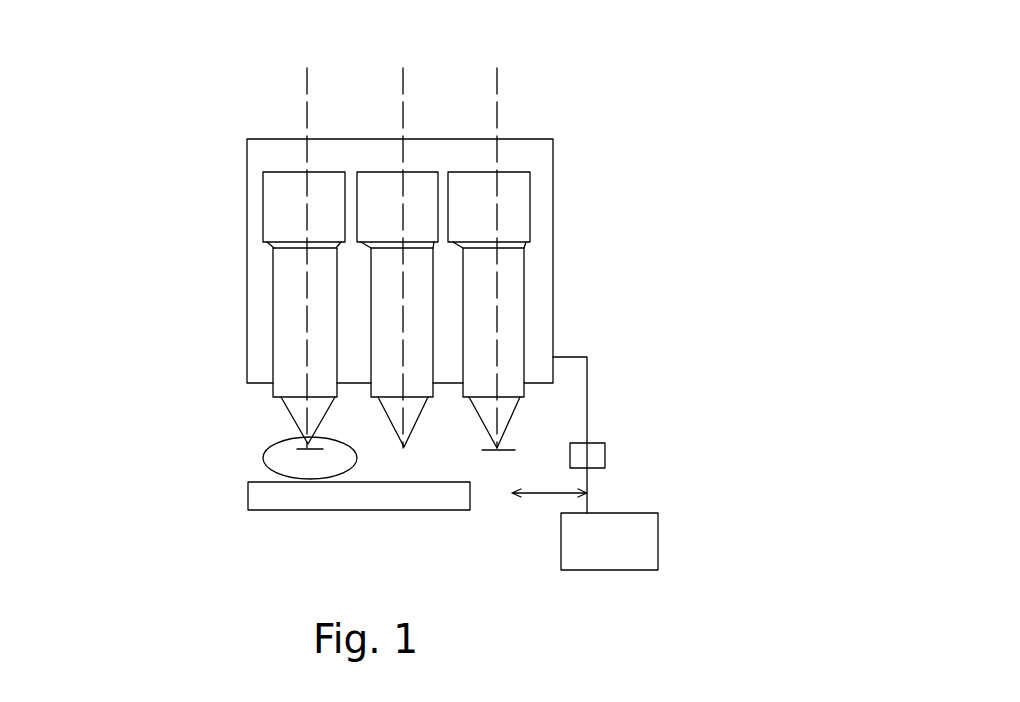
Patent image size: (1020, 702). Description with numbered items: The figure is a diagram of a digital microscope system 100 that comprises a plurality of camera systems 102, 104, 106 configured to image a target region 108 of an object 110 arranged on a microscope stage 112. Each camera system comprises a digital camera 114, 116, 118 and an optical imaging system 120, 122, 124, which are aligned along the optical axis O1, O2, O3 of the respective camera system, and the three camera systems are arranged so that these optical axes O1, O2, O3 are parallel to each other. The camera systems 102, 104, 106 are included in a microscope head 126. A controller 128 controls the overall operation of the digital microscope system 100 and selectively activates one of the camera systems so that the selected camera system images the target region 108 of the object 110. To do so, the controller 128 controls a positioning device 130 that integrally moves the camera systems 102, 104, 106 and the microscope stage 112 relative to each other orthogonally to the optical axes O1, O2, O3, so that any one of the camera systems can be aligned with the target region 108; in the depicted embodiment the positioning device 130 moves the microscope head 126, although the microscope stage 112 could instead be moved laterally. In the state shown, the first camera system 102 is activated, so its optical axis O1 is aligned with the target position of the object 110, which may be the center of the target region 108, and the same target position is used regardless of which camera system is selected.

The digital microscope system 100 is at (612, 115).
The first camera system 102 is at (265, 350).
The second camera system 104 is at (385, 333).
The third camera system 106 is at (485, 268).
The target region 108 is at (300, 470).
The object 110 is at (278, 463).
The microscope stage 112 is at (303, 504).
The digital camera 114 is at (275, 183).
The digital camera 116 is at (412, 183).
The digital camera 118 is at (503, 180).
The optical imaging system 120 is at (302, 376).
The optical imaging system 122 is at (418, 383).
The optical imaging system 124 is at (512, 385).
The microscope head 126 is at (273, 139).
The controller 128 is at (693, 522).
The positioning device 130 is at (627, 456).
The optical axis O1 is at (338, 426).
The optical axis O2 is at (383, 442).
The optical axis O3 is at (522, 449).